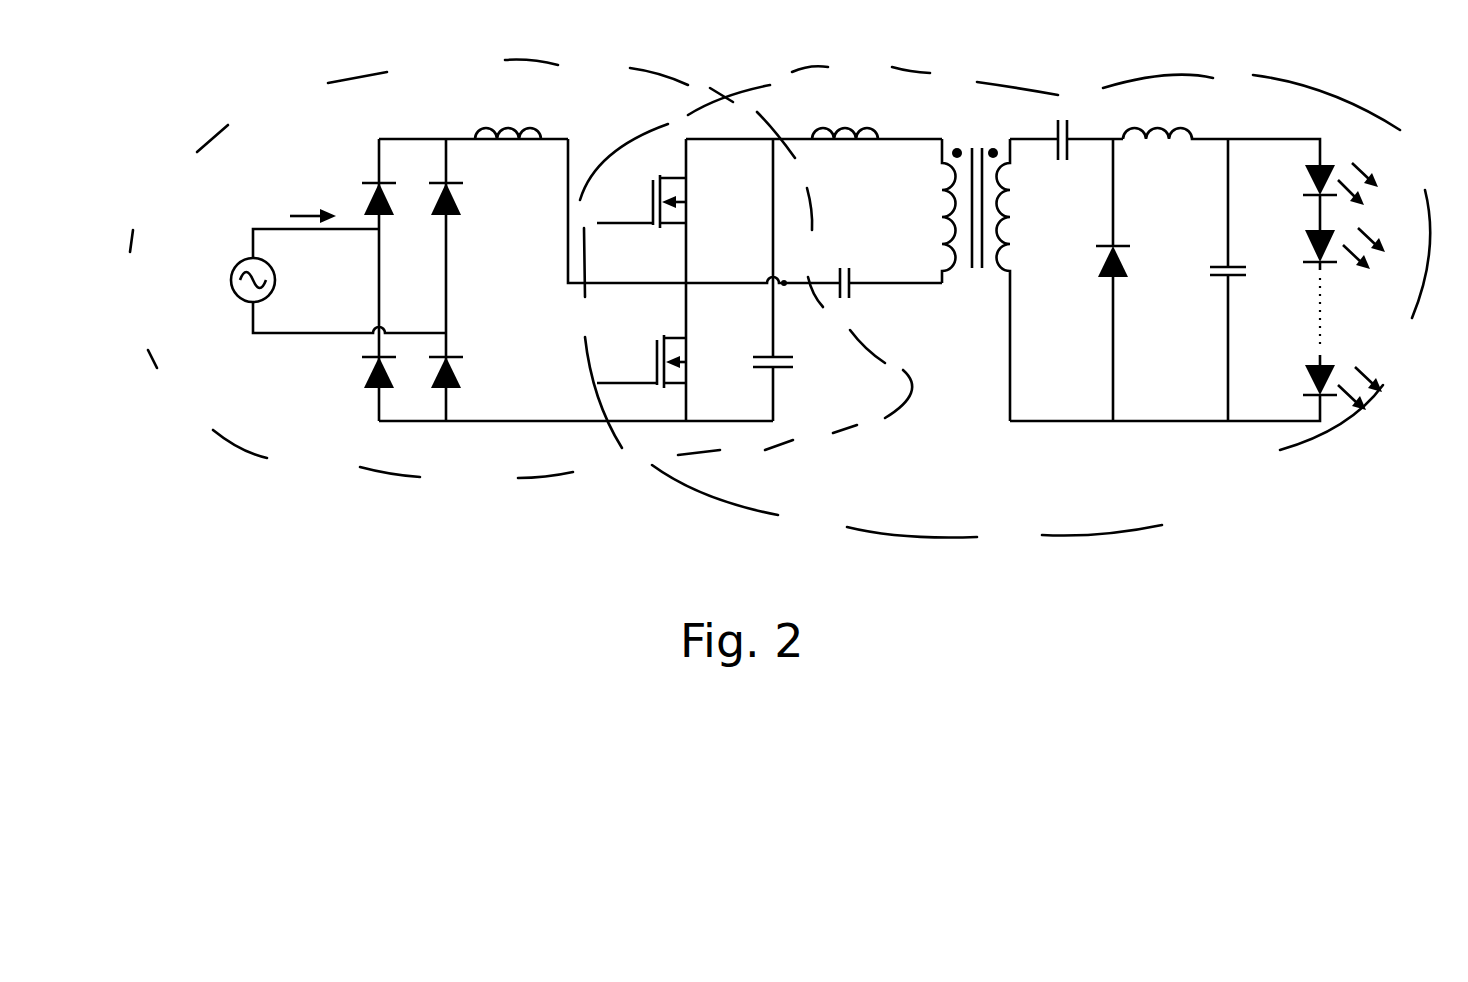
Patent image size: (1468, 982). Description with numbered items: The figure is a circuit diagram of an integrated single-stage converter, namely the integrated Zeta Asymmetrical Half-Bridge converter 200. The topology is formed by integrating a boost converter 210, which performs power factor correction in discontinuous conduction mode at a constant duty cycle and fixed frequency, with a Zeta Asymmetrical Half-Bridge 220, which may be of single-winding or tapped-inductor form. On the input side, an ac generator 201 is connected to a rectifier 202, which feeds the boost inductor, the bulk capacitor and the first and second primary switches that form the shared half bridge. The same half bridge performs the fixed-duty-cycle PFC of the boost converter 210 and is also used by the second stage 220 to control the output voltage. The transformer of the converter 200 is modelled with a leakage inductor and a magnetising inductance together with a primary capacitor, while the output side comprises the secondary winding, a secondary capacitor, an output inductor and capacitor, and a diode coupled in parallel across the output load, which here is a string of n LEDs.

The integrated Zeta Asymmetrical Half-Bridge converter 200 is at (233, 100).
The ac generator 201 is at (228, 282).
The rectifier 202 is at (360, 412).
The boost converter 210 is at (400, 468).
The Zeta Asymmetrical Half-Bridge (ZAHB) 220 is at (1093, 530).